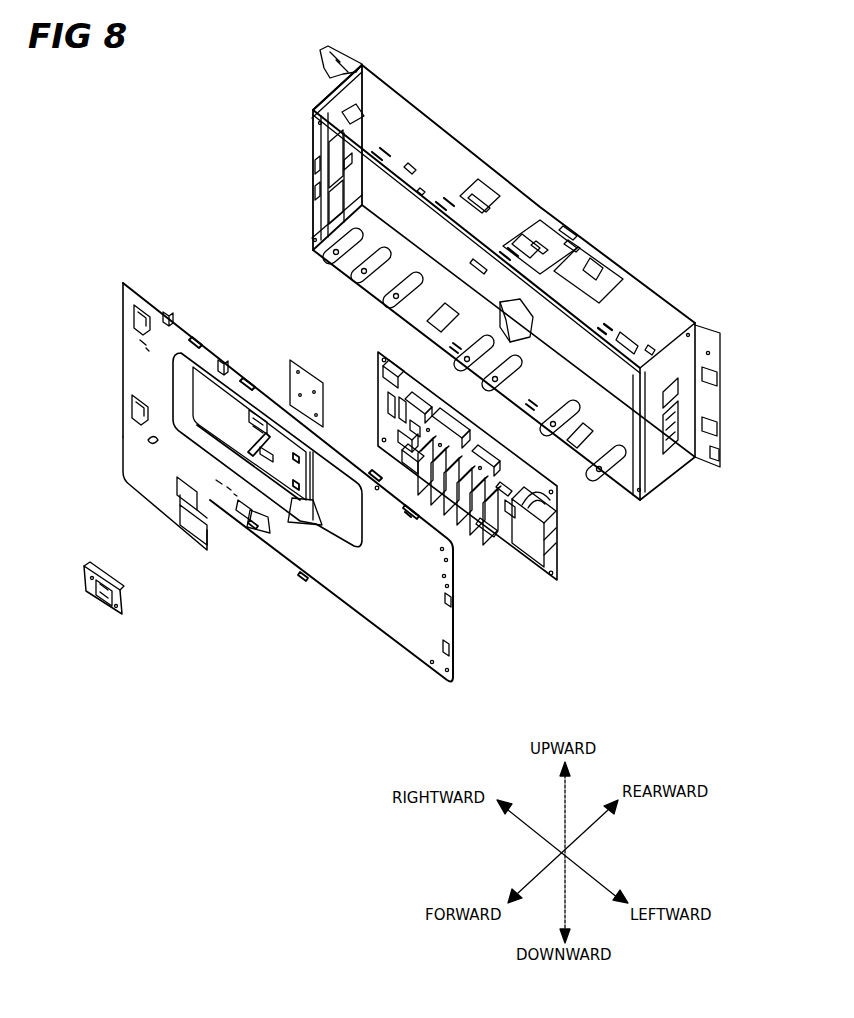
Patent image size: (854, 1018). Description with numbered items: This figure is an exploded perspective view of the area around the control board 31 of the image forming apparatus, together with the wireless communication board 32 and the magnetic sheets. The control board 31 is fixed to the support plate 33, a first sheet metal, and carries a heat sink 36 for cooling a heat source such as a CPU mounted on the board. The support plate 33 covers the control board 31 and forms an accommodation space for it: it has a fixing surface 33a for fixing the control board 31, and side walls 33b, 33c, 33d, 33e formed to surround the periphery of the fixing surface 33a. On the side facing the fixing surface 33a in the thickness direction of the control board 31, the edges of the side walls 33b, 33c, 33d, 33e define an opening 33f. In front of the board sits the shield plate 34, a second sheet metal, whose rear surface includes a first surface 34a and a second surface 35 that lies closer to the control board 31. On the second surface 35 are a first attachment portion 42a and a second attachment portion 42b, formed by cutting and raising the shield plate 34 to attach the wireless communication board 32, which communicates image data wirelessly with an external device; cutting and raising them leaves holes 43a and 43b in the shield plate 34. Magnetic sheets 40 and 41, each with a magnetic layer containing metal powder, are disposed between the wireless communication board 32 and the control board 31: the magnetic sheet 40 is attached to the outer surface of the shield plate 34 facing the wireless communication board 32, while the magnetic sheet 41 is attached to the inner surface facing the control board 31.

The control board 31 is at (503, 502).
The wireless communication board 32 is at (88, 592).
The support plate 33 is at (472, 307).
The fixing surface 33a is at (418, 218).
The side wall 33b is at (386, 104).
The side wall 33c is at (314, 130).
The side wall 33d is at (330, 270).
The side wall 33e is at (685, 462).
The opening 33f is at (578, 240).
The shield plate 34 is at (250, 499).
The first surface 34a is at (373, 600).
The second surface 35 is at (187, 350).
The heat sink 36 is at (473, 520).
The magnetic sheet 40 is at (153, 500).
The magnetic sheet 41 is at (291, 383).
The first attachment portion 42a is at (250, 412).
The second attachment portion 42b is at (247, 440).
The hole 43a is at (272, 442).
The hole 43b is at (262, 470).